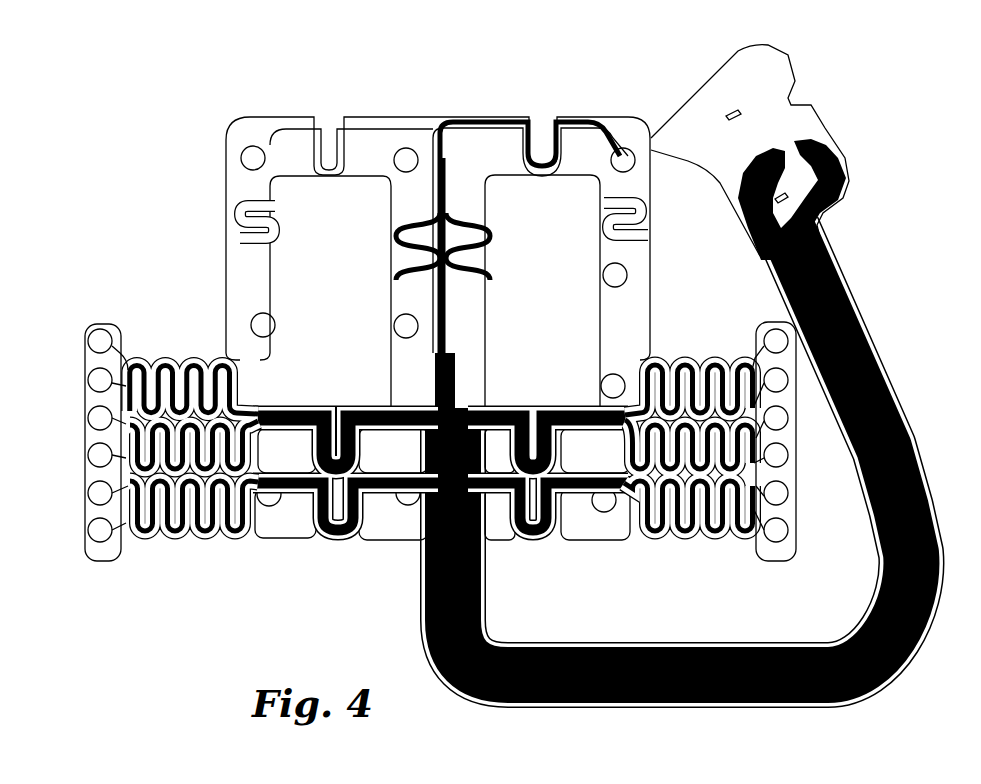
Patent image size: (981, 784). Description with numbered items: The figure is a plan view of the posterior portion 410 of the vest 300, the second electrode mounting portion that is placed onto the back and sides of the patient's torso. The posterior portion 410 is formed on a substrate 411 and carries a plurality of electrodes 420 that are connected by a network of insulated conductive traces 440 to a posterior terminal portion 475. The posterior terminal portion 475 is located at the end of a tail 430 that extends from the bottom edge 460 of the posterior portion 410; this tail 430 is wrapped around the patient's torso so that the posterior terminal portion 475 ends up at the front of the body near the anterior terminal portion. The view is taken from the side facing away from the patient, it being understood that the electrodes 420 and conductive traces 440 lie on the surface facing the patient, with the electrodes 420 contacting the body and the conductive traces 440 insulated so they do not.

The vest 300 is at (224, 72).
The posterior portion 410 is at (212, 118).
The substrate 411 is at (240, 106).
The electrodes 420 is at (615, 142).
The tail 430 is at (854, 324).
The conductive traces 440 is at (433, 373).
The bottom edge 460 is at (406, 542).
The posterior terminal portion 475 is at (820, 107).